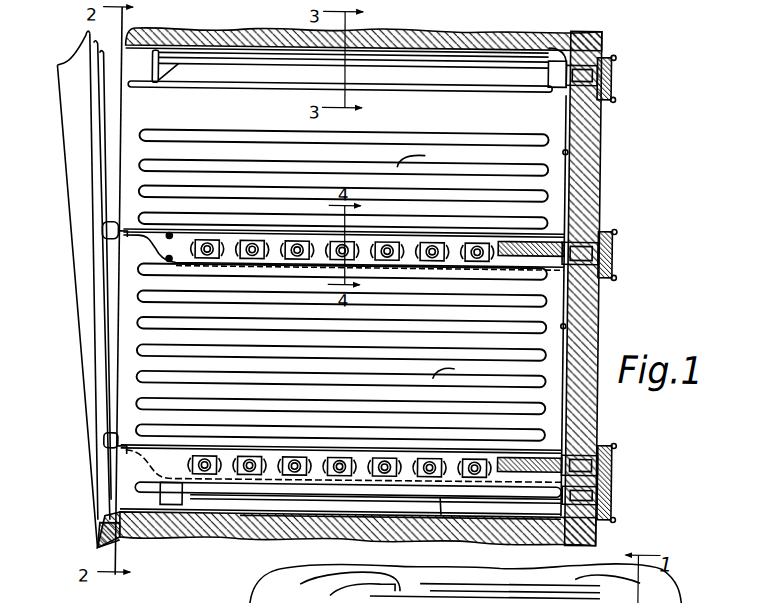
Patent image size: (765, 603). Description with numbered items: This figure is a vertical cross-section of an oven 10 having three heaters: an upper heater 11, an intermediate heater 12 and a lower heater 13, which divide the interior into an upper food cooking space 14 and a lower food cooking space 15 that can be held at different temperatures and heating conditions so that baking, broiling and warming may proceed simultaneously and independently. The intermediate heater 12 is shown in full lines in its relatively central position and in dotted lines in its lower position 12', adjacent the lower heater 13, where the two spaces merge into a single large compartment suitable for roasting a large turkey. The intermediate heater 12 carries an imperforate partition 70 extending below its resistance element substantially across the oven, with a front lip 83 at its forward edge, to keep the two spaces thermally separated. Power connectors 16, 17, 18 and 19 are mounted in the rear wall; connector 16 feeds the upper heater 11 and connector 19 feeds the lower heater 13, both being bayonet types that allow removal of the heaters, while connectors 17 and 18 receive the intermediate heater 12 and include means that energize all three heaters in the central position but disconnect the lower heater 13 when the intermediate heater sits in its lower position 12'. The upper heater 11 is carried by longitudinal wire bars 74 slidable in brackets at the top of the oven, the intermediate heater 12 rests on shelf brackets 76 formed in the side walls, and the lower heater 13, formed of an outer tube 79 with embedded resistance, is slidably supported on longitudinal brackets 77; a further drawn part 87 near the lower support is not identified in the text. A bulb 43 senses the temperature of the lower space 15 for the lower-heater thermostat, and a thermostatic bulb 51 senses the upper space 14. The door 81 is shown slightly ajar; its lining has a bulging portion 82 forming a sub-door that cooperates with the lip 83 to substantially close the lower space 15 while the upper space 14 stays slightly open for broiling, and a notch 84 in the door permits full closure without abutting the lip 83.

The oven 10 is at (543, 115).
The upper heater 11 is at (429, 68).
The intermediate heater 12 is at (377, 270).
The lower position of intermediate heater 12' is at (341, 455).
The lower heater 13 is at (267, 527).
The upper food cooking space 14 is at (343, 178).
The lower food cooking space 15 is at (341, 351).
The power connector 16 is at (611, 72).
The power connector 17 is at (614, 250).
The power connector 18 is at (622, 456).
The power connector 19 is at (622, 492).
The bulb 43 is at (565, 321).
The thermostatic bulb 51 is at (563, 147).
The imperforate partition 70 is at (250, 277).
The longitudinal wire bars 74 is at (401, 567).
The shelf brackets 76 is at (437, 261).
The longitudinal brackets 77 is at (165, 490).
The outer tube 79 is at (446, 511).
The door 81 is at (93, 344).
The bulging portion 82 is at (121, 246).
The front lip 83 is at (128, 234).
The notch 84 is at (122, 450).
The bracket end 87 is at (128, 447).